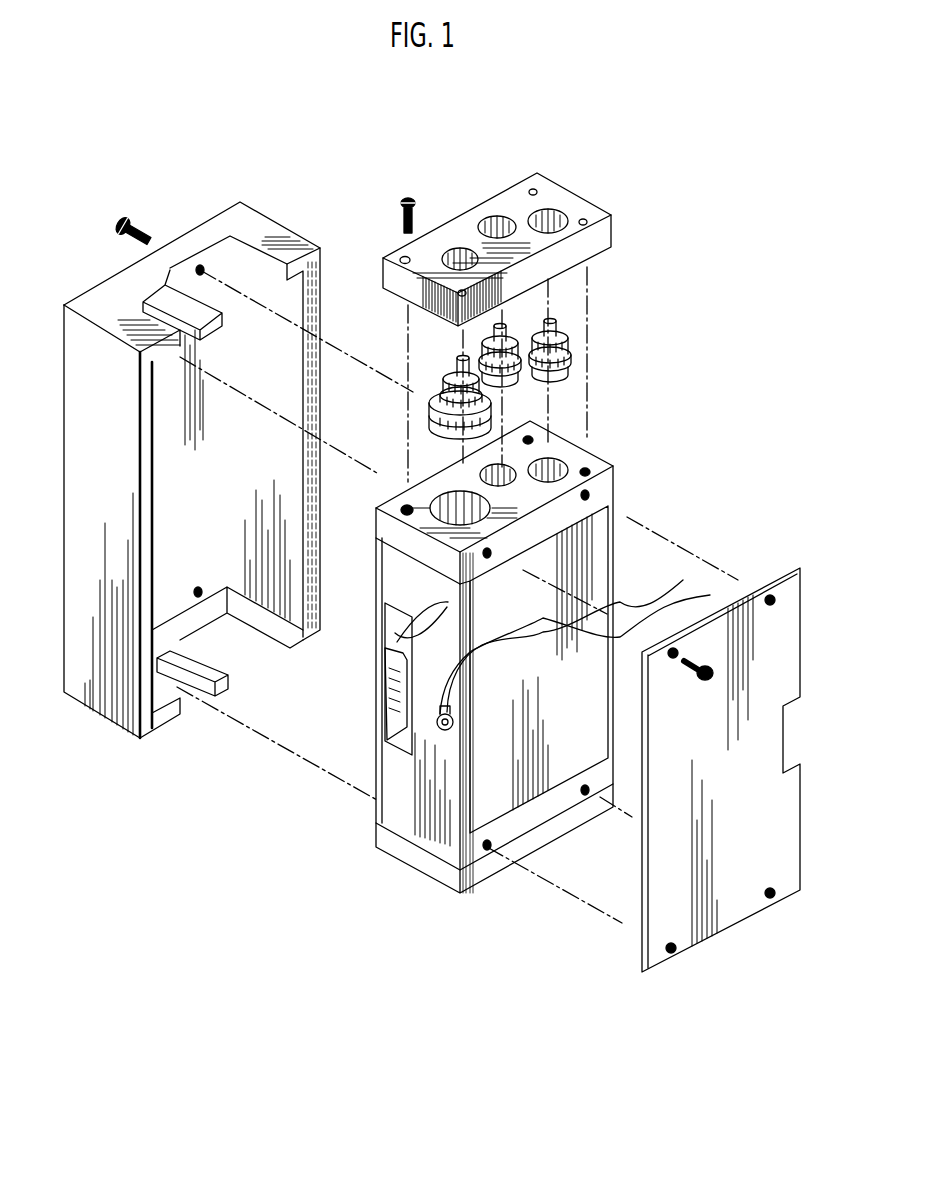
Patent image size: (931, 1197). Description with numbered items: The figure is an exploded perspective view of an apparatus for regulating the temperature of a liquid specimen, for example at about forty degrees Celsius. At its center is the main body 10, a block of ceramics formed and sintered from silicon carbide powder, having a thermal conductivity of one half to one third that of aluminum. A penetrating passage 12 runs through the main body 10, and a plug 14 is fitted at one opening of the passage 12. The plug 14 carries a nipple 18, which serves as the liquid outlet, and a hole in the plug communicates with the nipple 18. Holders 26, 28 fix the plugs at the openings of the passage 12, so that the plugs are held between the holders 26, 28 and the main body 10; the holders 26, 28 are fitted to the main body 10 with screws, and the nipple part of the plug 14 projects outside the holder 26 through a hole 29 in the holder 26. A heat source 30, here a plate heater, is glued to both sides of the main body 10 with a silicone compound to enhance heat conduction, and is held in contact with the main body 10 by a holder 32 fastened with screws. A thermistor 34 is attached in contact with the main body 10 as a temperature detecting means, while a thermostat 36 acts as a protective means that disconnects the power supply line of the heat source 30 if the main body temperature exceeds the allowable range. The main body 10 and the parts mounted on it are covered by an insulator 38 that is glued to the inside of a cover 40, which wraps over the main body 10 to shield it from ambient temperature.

The main body 10 is at (432, 823).
The penetrating passage 12 is at (442, 548).
The plug 14 is at (493, 403).
The nipple 18 is at (455, 362).
The holder 26 is at (568, 197).
The holder 28 is at (445, 877).
The hole 29 is at (470, 250).
The heat source 30 is at (527, 775).
The holder 32 is at (662, 927).
The thermistor 34 is at (390, 703).
The thermostat 36 is at (442, 712).
The insulator 38 is at (170, 683).
The cover 40 is at (108, 683).